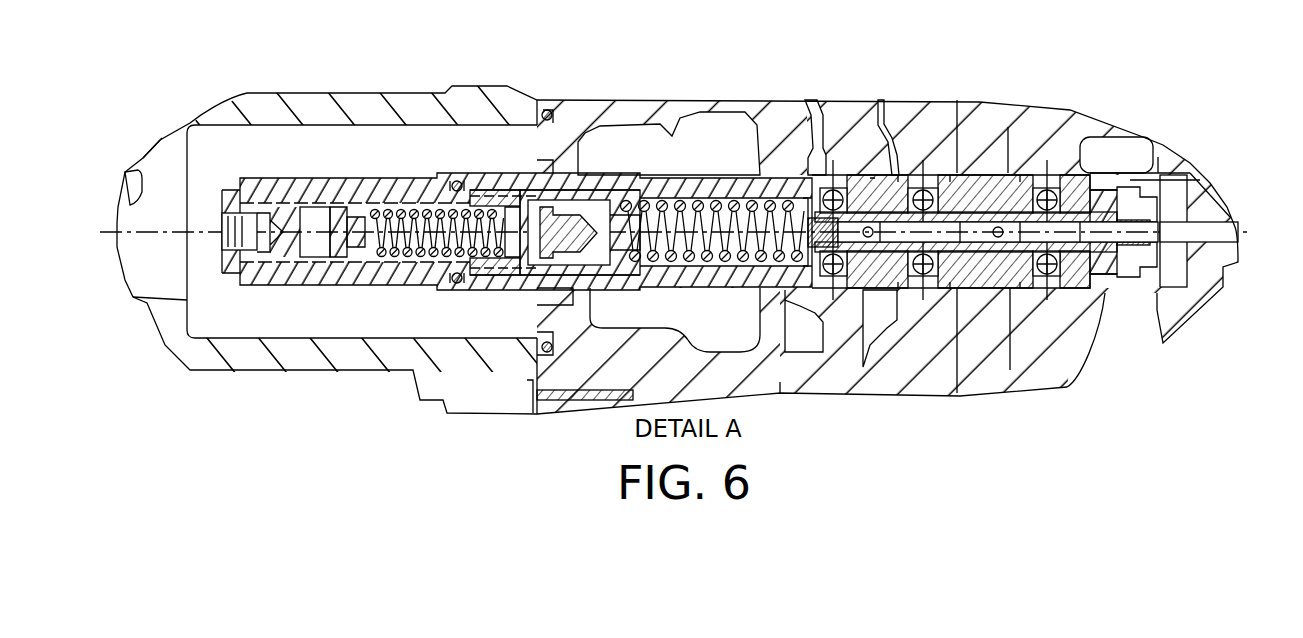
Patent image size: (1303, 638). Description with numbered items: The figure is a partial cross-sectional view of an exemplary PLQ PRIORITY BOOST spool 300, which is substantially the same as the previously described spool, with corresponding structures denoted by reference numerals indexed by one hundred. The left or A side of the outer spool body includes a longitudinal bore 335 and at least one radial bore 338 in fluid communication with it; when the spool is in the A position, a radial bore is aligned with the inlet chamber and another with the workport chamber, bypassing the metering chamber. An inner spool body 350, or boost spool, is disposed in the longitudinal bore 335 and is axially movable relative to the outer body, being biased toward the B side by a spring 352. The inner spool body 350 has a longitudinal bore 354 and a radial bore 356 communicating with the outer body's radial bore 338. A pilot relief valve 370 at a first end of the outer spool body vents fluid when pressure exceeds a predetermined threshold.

The spool 300 is at (1226, 270).
The longitudinal bore 335 is at (1022, 178).
The radial bore 338 is at (830, 190).
The inner spool body 350 is at (969, 205).
The spring 352 is at (712, 198).
The longitudinal bore 354 is at (1090, 233).
The radial bore 356 is at (999, 248).
The pilot relief valve 370 is at (548, 213).